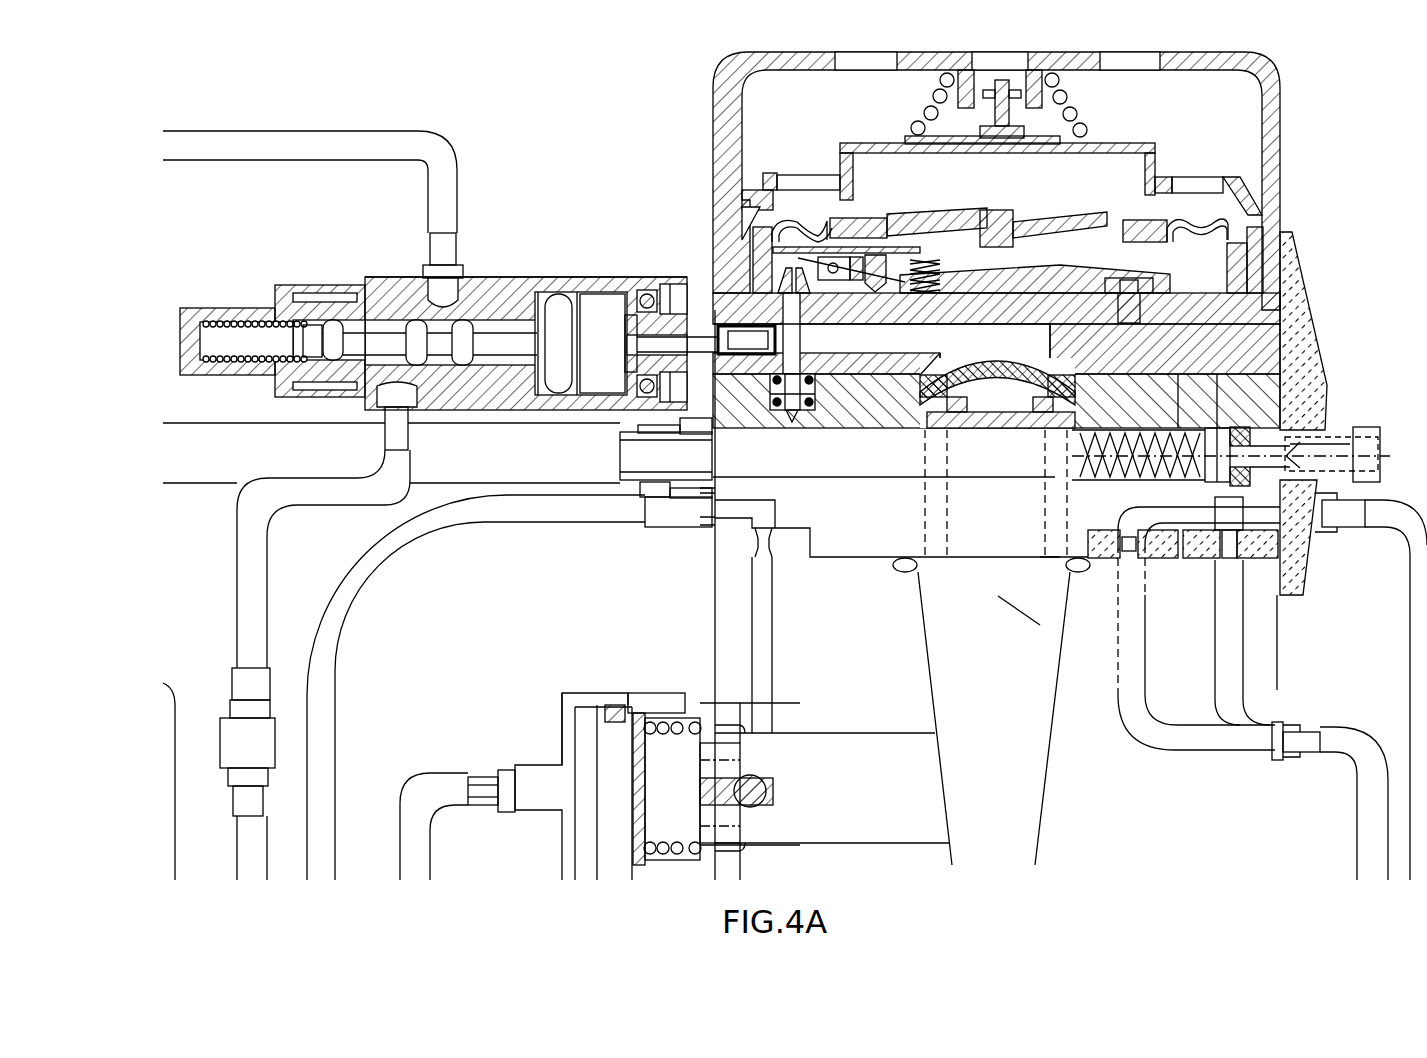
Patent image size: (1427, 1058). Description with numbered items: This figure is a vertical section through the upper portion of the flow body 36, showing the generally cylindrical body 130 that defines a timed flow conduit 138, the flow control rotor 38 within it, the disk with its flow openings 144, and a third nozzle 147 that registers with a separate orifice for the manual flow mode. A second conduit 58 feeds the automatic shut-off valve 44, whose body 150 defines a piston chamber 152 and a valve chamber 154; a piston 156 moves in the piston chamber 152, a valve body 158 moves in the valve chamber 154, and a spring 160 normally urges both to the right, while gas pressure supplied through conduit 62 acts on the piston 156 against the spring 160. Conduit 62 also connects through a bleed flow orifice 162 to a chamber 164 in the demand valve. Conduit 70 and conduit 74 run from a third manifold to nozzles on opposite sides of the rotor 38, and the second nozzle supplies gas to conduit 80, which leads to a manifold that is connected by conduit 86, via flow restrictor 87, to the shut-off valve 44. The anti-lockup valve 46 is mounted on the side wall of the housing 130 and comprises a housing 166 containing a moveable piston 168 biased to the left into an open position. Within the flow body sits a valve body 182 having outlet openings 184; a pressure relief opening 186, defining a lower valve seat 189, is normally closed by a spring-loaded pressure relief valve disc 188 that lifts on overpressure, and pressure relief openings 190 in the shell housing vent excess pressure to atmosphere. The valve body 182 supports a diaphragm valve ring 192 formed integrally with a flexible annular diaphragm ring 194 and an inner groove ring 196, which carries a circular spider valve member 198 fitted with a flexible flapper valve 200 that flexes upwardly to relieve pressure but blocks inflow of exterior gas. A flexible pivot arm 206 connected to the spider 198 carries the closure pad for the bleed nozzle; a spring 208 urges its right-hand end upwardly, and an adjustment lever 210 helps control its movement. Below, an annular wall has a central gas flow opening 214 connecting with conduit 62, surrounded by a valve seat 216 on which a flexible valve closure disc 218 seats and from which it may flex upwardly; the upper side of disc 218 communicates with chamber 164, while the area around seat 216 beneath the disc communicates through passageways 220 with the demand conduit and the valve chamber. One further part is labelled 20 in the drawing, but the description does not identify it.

The push rod 20 is at (1347, 432).
The flow body 36 is at (663, 638).
The flow control rotor 38 is at (1328, 503).
The automatic shut-off valve 44 is at (533, 268).
The anti-lockup valve 46 is at (470, 748).
The second conduit 58 is at (256, 153).
The conduit 62 is at (548, 456).
The conduit 70 is at (340, 617).
The conduit 74 is at (1388, 498).
The conduit 80 is at (1372, 807).
The conduit 86 is at (253, 575).
The flow restrictor 87 is at (227, 722).
The generally cylindrical body 130 is at (1298, 632).
The timed flow conduit 138 is at (648, 700).
The flow openings 144 is at (667, 521).
The third nozzle 147 is at (1242, 611).
The body 150 is at (490, 287).
The piston chamber 152 is at (605, 302).
The valve chamber 154 is at (390, 313).
The piston 156 is at (557, 310).
The valve body 158 is at (440, 333).
The spring 160 is at (257, 363).
The bleed flow orifice 162 is at (788, 430).
The chamber 164 is at (1015, 353).
The housing 166 is at (565, 836).
The moveable piston 168 is at (610, 762).
The valve body 182 is at (770, 172).
The outlet openings 184 is at (823, 183).
The pressure relief opening 186 is at (1190, 157).
The pressure relief valve disc 188 is at (1117, 150).
The lower valve seat 189 is at (1122, 198).
The pressure relief openings 190 is at (853, 62).
The diaphragm valve ring 192 is at (1230, 265).
The flexible annular diaphragm ring 194 is at (1205, 222).
The inner integral groove ring 196 is at (1140, 233).
The circular spider valve member 198 is at (1063, 238).
The flexible flapper valve 200 is at (1063, 215).
The flexible pivot arm 206 is at (897, 240).
The spring 208 is at (930, 257).
The adjustment lever 210 is at (985, 270).
The central gas flow opening 214 is at (990, 392).
The valve seat 216 is at (978, 400).
The flexible valve closure disc 218 is at (958, 367).
The passageways 220 is at (925, 457).